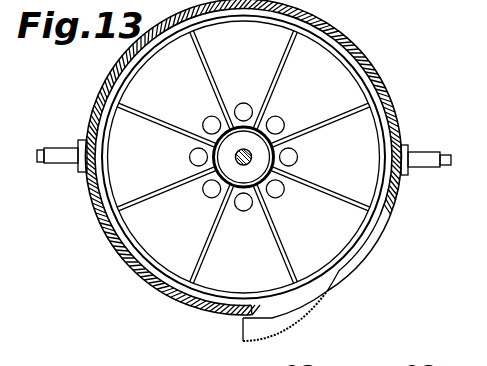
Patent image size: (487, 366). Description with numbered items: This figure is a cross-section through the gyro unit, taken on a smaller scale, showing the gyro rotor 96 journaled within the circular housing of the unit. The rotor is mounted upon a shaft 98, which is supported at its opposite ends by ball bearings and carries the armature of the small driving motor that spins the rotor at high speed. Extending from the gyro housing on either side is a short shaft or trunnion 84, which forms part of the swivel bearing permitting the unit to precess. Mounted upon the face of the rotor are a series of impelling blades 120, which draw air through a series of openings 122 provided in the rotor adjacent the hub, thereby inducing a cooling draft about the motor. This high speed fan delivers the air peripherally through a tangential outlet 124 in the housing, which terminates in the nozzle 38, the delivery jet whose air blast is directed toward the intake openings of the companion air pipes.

The gyro rotor 96 is at (343, 236).
The impelling blades 120 is at (335, 110).
The openings 122 is at (275, 125).
The shaft 98 is at (251, 159).
The shaft or trunnion 84 is at (71, 119).
The tangential outlet 124 is at (285, 318).
The nozzle 38 is at (243, 345).